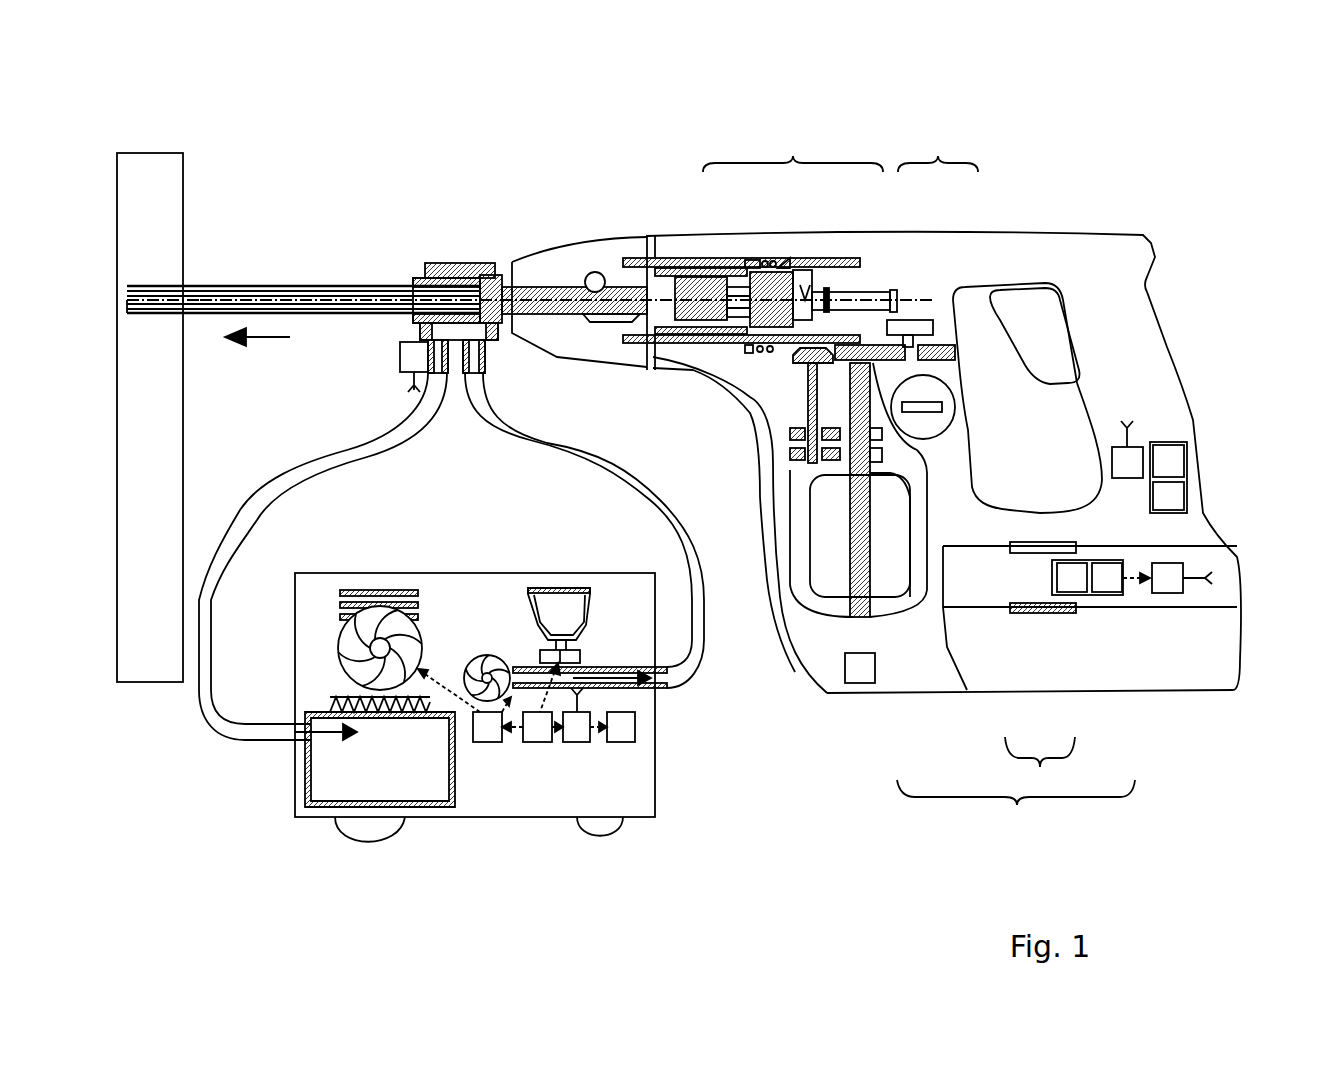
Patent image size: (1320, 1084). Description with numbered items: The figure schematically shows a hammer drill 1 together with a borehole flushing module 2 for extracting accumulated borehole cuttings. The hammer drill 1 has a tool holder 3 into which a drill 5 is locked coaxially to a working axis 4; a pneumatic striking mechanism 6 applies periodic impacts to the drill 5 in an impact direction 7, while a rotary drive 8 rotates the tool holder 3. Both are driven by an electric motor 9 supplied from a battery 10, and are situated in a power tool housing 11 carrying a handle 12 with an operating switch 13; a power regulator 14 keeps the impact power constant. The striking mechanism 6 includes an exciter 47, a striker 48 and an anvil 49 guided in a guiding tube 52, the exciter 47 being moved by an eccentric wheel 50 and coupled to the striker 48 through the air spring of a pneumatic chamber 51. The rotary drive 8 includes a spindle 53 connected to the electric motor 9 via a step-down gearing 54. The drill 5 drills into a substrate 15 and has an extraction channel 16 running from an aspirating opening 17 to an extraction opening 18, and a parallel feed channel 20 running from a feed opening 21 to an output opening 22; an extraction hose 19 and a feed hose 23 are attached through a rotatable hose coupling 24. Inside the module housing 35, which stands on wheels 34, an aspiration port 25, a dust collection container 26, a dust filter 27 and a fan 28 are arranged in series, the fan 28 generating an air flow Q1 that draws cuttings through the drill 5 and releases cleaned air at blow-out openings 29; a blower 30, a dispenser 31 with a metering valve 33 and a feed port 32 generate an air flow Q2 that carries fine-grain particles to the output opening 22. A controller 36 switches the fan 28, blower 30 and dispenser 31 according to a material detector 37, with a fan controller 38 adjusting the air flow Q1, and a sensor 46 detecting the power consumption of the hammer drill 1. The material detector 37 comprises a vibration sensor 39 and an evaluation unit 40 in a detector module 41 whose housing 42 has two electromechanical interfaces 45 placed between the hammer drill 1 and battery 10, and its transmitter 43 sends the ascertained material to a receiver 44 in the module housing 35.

The hammer drill 1 is at (573, 128).
The borehole flushing module 2 is at (330, 885).
The tool holder 3 is at (608, 265).
The working axis 4 is at (560, 288).
The drill 5 is at (318, 128).
The pneumatic striking mechanism 6 is at (793, 148).
The impact direction 7 is at (290, 337).
The rotary drive 8 is at (938, 148).
The electric motor 9 is at (870, 513).
The battery 10 is at (1215, 660).
The power tool housing 11 is at (663, 237).
The handle 12 is at (1140, 338).
The operating switch 13 is at (1053, 315).
The power regulator 14 is at (857, 665).
The substrate 15 is at (168, 178).
The extraction channel 16 is at (387, 312).
The aspirating opening 17 is at (153, 311).
The extraction opening 18 is at (440, 318).
The extraction hose 19 is at (342, 450).
The feed channel 20 is at (337, 289).
The feed opening 21 is at (467, 283).
The output opening 22 is at (130, 298).
The feed hose 23 is at (557, 448).
The hose coupling 24 is at (493, 272).
The aspiration port 25 is at (305, 724).
The dust collection container 26 is at (347, 720).
The dust filter 27 is at (357, 700).
The fan 28 is at (380, 645).
The blow-out openings 29 is at (357, 608).
The blower 30 is at (500, 665).
The dispenser 31 is at (568, 615).
The feed port 32 is at (663, 670).
The metering valve 33 is at (557, 657).
The wheels 34 is at (377, 835).
The housing 35 is at (300, 783).
The controller 36 is at (538, 745).
The material detector 37 is at (1040, 620).
The fan controller 38 is at (490, 745).
The vibration sensor 39 is at (1172, 463).
The evaluation unit 40 is at (1172, 496).
The detector module 41 is at (402, 355).
The housing 42 is at (1043, 552).
The transmitter 43 is at (1128, 464).
The receiver 44 is at (580, 745).
The electromechanical interfaces 45 is at (977, 590).
The sensor 46 is at (622, 745).
The exciter 47 is at (828, 272).
The striker 48 is at (760, 275).
The anvil 49 is at (697, 275).
The eccentric wheel 50 is at (918, 318).
The pneumatic chamber 51 is at (805, 278).
The guiding tube 52 is at (733, 270).
The spindle 53 is at (828, 335).
The step-down gearing 54 is at (822, 410).
The air flow Q1 is at (327, 737).
The air flow Q2 is at (613, 672).